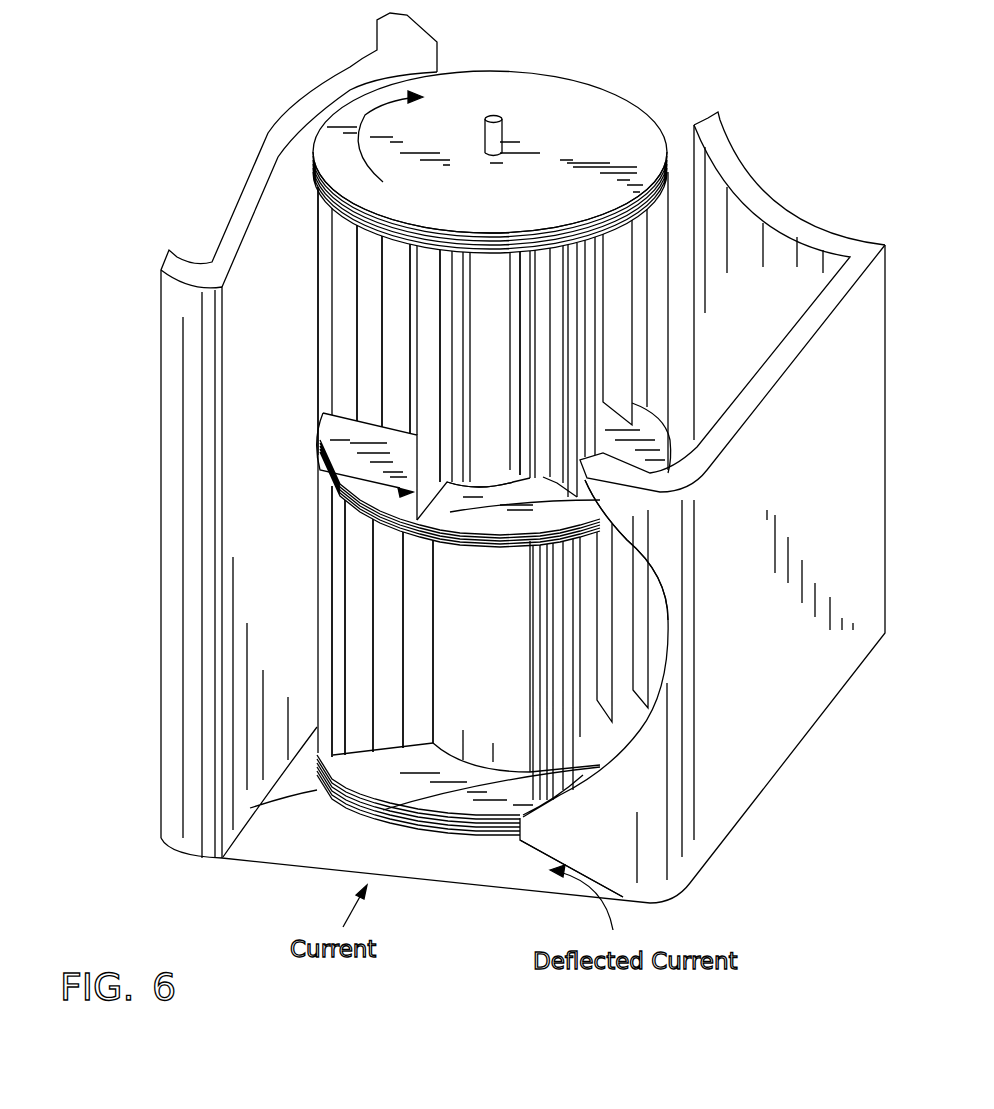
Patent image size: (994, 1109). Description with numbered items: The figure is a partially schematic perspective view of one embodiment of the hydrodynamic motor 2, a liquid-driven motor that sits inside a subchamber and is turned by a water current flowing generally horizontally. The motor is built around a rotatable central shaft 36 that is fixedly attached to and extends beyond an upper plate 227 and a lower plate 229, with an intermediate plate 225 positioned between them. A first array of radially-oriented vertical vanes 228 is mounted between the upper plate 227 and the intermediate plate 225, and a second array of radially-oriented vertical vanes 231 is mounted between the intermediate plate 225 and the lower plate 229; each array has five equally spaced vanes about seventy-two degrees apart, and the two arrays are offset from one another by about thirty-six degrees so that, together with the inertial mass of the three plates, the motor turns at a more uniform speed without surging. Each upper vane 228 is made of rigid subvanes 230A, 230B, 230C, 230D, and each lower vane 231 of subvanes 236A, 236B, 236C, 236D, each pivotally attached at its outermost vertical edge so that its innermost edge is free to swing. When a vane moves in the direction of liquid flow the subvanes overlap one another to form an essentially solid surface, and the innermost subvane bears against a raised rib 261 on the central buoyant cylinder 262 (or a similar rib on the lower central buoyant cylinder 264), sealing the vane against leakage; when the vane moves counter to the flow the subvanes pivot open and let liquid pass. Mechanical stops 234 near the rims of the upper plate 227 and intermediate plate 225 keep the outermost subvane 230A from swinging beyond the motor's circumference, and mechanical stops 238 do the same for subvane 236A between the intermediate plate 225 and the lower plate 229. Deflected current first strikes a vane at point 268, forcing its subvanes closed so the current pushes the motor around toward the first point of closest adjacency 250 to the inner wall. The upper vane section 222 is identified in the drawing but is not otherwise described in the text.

The hydrodynamic motor 2 is at (516, 134).
The rotatable central shaft 36 is at (500, 120).
The upper rotor section 222 is at (366, 339).
The intermediate plate 225 is at (421, 627).
The upper plate 227 is at (577, 100).
The first array of radially-oriented vanes 228 is at (400, 490).
The lower plate 229 is at (340, 787).
The subvane 230A is at (330, 296).
The subvane 230B is at (363, 318).
The subvane 230C is at (385, 336).
The subvane 230D is at (405, 372).
The second array of radially-oriented vanes 231 is at (383, 810).
The mechanical stops 234 is at (580, 502).
The subvane 236A is at (333, 614).
The subvane 236B is at (352, 630).
The subvane 236C is at (383, 657).
The subvane 236D is at (407, 677).
The mechanical stops 238 is at (378, 523).
The first point of closest adjacency 250 is at (307, 143).
The raised rib 261 is at (530, 293).
The central buoyant cylinder 262 is at (517, 350).
The central buoyant cylinder 264 is at (520, 668).
The point of initial contact 268 is at (520, 843).